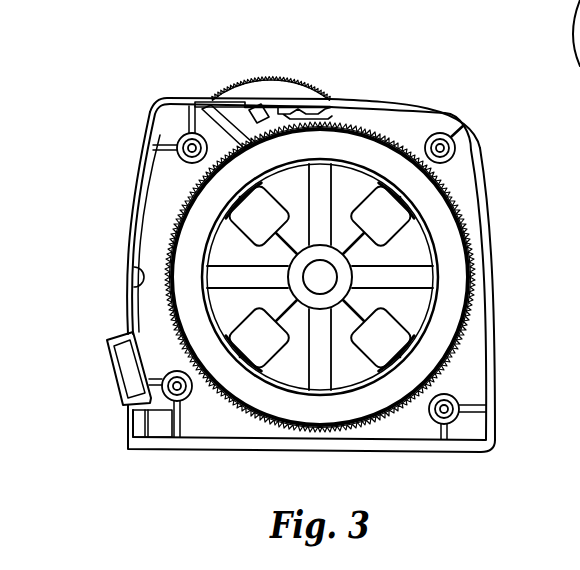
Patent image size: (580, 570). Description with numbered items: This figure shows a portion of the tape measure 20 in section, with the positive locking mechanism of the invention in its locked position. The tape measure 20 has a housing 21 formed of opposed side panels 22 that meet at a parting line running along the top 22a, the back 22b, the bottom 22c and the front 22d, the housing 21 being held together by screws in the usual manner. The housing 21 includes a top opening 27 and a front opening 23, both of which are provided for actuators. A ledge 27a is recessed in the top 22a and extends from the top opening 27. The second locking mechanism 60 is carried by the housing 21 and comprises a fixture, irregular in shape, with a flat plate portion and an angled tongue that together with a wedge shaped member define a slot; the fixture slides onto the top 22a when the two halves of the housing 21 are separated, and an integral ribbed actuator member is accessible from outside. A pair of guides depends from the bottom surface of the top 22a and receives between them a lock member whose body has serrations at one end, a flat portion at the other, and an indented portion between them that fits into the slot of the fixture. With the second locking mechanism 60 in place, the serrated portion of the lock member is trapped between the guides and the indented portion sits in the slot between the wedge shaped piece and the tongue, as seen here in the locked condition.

The tape measure 20 is at (523, 166).
The housing 21 is at (500, 211).
The side panels 22 is at (180, 191).
The top 22a is at (376, 101).
The back 22b is at (495, 290).
The bottom 22c is at (372, 452).
The front 22d is at (125, 238).
The front opening 23 is at (133, 175).
The top opening 27 is at (250, 102).
The ledge 27a is at (207, 100).
The second locking mechanism 60 is at (322, 84).